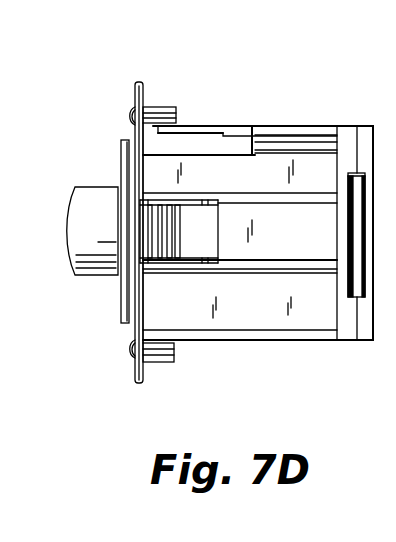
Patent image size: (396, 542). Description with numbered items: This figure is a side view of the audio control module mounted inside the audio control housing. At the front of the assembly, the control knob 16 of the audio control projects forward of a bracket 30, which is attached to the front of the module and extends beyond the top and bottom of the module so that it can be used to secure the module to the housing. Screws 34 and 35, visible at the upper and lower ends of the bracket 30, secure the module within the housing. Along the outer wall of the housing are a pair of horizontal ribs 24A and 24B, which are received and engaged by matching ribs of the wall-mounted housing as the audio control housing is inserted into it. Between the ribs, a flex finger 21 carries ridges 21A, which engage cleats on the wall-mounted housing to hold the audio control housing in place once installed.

The control knob 16 is at (70, 260).
The flex finger 21 is at (295, 253).
The ridge 21A is at (162, 245).
The horizontal rib 24A is at (235, 197).
The horizontal rib 24B is at (240, 273).
The bracket 30 is at (141, 87).
The screw 34 is at (132, 113).
The screw 35 is at (128, 348).